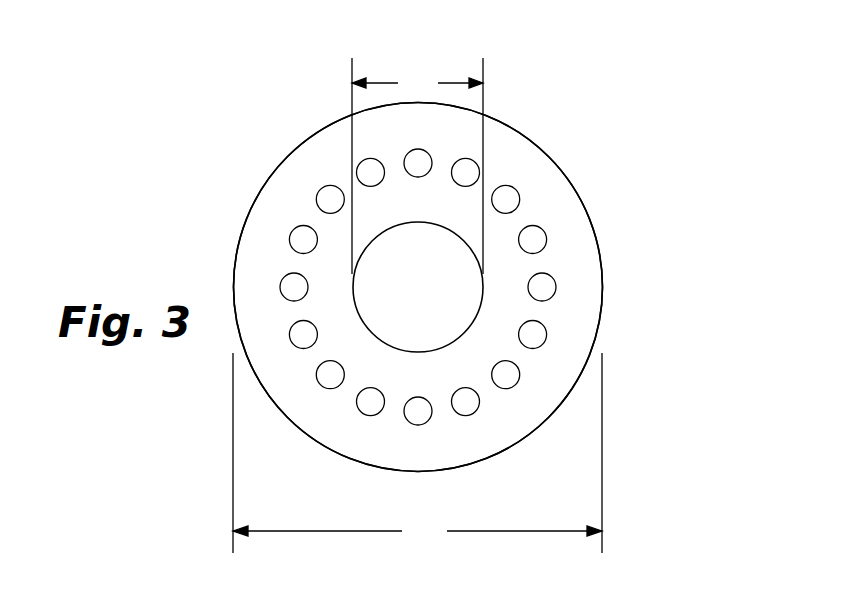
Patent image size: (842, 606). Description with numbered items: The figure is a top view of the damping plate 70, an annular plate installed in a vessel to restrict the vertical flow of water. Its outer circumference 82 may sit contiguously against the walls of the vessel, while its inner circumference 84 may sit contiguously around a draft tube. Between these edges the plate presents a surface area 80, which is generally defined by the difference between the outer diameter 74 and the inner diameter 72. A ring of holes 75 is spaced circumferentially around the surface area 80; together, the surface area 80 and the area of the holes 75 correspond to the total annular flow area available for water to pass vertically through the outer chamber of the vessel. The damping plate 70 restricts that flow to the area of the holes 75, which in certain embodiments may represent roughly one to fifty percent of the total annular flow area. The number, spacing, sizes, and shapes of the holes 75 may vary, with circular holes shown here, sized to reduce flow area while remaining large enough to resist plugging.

The damping plate 70 is at (598, 62).
The inner diameter 72 is at (417, 166).
The outer diameter 74 is at (417, 453).
The holes 75 is at (542, 287).
The surface area 80 is at (573, 317).
The outer circumference 82 is at (547, 152).
The inner circumference 84 is at (477, 310).